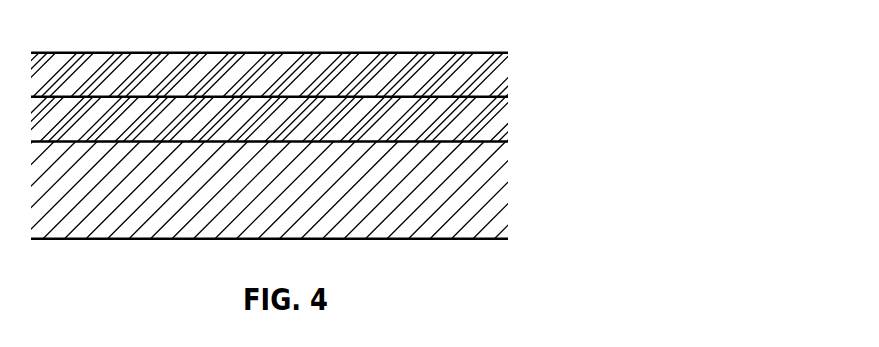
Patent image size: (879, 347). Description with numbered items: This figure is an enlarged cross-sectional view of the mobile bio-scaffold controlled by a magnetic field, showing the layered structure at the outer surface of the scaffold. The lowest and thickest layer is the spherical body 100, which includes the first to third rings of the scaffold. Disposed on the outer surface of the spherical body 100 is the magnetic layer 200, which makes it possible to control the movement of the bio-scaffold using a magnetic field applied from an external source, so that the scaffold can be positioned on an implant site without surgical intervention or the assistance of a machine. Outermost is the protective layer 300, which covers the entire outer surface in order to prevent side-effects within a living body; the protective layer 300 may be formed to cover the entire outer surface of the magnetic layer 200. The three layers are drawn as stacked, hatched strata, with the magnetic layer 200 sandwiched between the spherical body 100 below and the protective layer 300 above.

The protective layer 300 is at (492, 73).
The magnetic layer 200 is at (490, 118).
The spherical body 100 is at (483, 188).